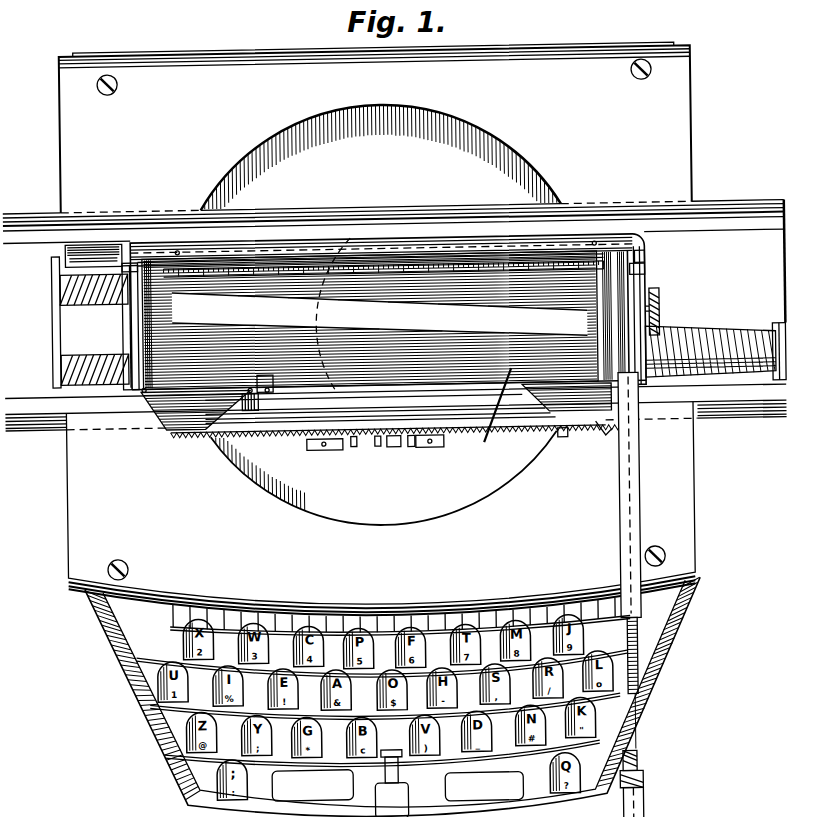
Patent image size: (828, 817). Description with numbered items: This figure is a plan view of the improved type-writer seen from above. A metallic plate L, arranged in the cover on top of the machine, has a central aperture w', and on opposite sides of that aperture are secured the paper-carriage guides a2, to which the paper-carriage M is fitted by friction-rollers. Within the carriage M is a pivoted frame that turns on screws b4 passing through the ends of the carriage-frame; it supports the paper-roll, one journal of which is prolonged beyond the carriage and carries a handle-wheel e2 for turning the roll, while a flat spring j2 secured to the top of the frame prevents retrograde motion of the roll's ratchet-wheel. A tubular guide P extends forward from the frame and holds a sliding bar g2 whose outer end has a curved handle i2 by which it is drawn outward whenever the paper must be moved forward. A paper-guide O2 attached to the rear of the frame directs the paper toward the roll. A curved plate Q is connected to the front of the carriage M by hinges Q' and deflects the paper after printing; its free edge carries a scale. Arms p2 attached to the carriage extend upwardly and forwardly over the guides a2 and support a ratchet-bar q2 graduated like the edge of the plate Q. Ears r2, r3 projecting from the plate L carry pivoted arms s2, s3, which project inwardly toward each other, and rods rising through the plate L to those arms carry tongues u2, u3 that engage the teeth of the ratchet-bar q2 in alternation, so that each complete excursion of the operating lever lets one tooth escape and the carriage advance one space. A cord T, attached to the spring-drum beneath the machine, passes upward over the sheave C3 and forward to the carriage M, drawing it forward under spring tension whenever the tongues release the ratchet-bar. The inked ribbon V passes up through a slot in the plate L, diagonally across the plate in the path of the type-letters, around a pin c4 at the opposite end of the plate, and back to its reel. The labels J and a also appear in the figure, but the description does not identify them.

The sheave C3 is at (82, 254).
The cord T is at (122, 272).
The metallic plate L is at (382, 315).
The central aperture w' is at (381, 229).
The paper-carriage guides a2 is at (735, 406).
The flat spring j2 is at (628, 280).
The screws b4 is at (634, 297).
The paper-carriage M is at (639, 302).
The handle-wheel e2 is at (655, 310).
The pin c4 is at (772, 342).
The inked ribbon V is at (57, 369).
The curved plate Q is at (383, 320).
The paper-guide O2 is at (384, 411).
The ear r2 is at (327, 447).
The arm s2 is at (346, 448).
The tongue u2 is at (374, 450).
The arm s3 is at (392, 448).
The tongue u3 is at (416, 451).
The ear r3 is at (424, 453).
The hinges Q' is at (497, 410).
The ratchet-bar q2 is at (556, 450).
The arms p2 is at (594, 438).
The tubular guide P is at (640, 816).
The sliding bar g2 is at (560, 805).
The curved handle i2 is at (639, 680).
The space key lever J is at (402, 785).
The key a is at (400, 783).